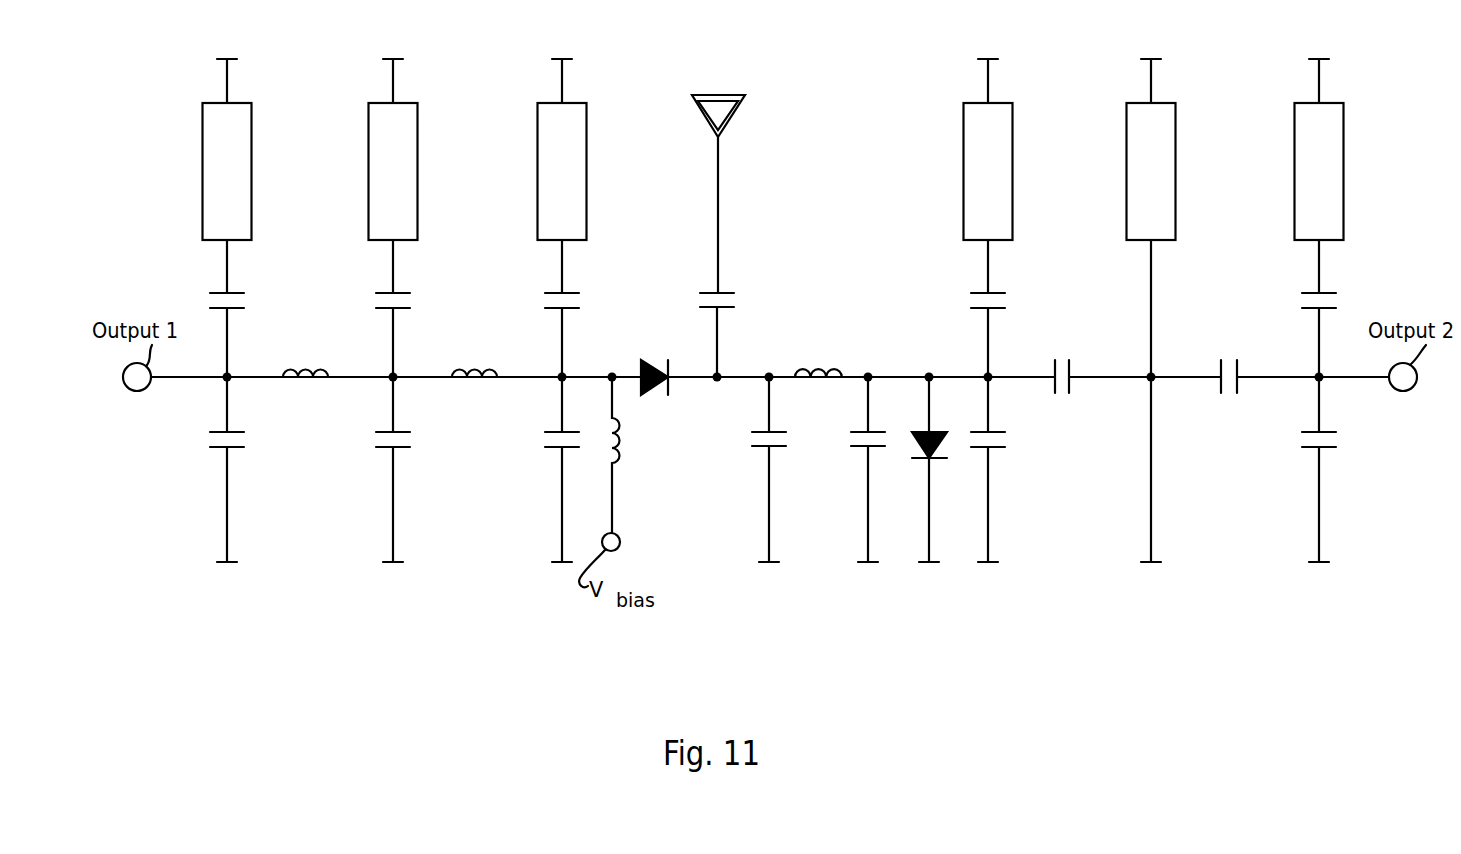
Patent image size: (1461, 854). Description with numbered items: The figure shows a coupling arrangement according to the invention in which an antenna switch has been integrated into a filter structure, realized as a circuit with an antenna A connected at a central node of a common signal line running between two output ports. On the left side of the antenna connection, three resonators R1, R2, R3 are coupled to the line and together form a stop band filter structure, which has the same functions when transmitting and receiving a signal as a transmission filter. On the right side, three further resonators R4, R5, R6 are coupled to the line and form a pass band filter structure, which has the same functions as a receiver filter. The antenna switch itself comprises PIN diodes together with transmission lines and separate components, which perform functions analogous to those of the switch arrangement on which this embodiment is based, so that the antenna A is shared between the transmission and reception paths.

The resonator R1 is at (252, 163).
The resonator R2 is at (418, 163).
The resonator R3 is at (587, 163).
The resonator R4 is at (1013, 163).
The resonator R5 is at (1176, 163).
The resonator R6 is at (1344, 163).
The antenna A is at (728, 92).